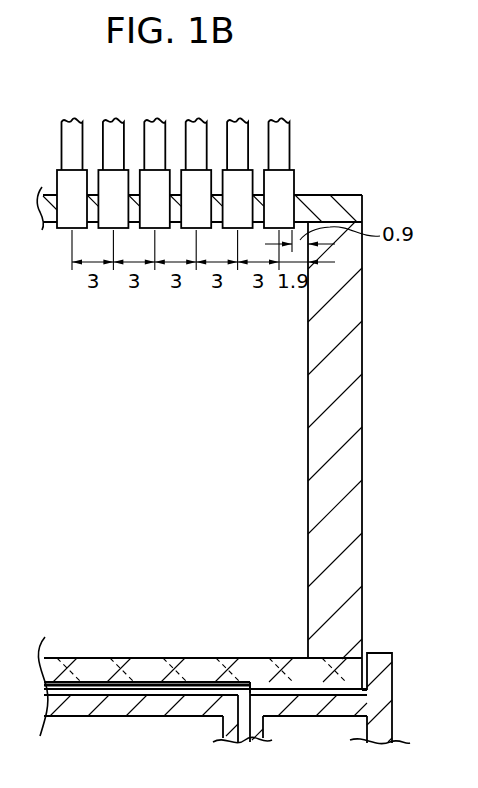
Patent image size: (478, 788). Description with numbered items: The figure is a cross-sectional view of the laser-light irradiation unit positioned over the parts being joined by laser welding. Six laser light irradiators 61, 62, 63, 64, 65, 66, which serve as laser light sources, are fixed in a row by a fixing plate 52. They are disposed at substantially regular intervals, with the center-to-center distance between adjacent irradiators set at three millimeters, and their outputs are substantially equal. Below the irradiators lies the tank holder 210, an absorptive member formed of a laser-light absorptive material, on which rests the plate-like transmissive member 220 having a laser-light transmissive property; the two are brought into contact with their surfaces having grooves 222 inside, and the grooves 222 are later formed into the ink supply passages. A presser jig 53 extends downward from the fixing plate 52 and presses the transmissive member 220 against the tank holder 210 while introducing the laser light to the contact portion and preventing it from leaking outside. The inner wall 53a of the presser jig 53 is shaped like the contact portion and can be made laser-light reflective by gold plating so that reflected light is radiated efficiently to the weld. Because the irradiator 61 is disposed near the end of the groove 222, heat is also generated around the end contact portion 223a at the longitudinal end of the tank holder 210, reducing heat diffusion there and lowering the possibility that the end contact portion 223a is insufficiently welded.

The laser light irradiator 61 is at (292, 176).
The laser light irradiator 62 is at (251, 176).
The laser light irradiator 63 is at (209, 176).
The laser light irradiator 64 is at (168, 176).
The laser light irradiator 65 is at (126, 176).
The laser light irradiator 66 is at (85, 176).
The fixing plate 52 is at (354, 211).
The presser jig 53 is at (357, 343).
The inner wall 53a is at (308, 455).
The transmissive member 220 is at (321, 666).
The groove 222 is at (86, 695).
The tank holder 210 is at (388, 712).
The end contact portion 223a is at (259, 686).